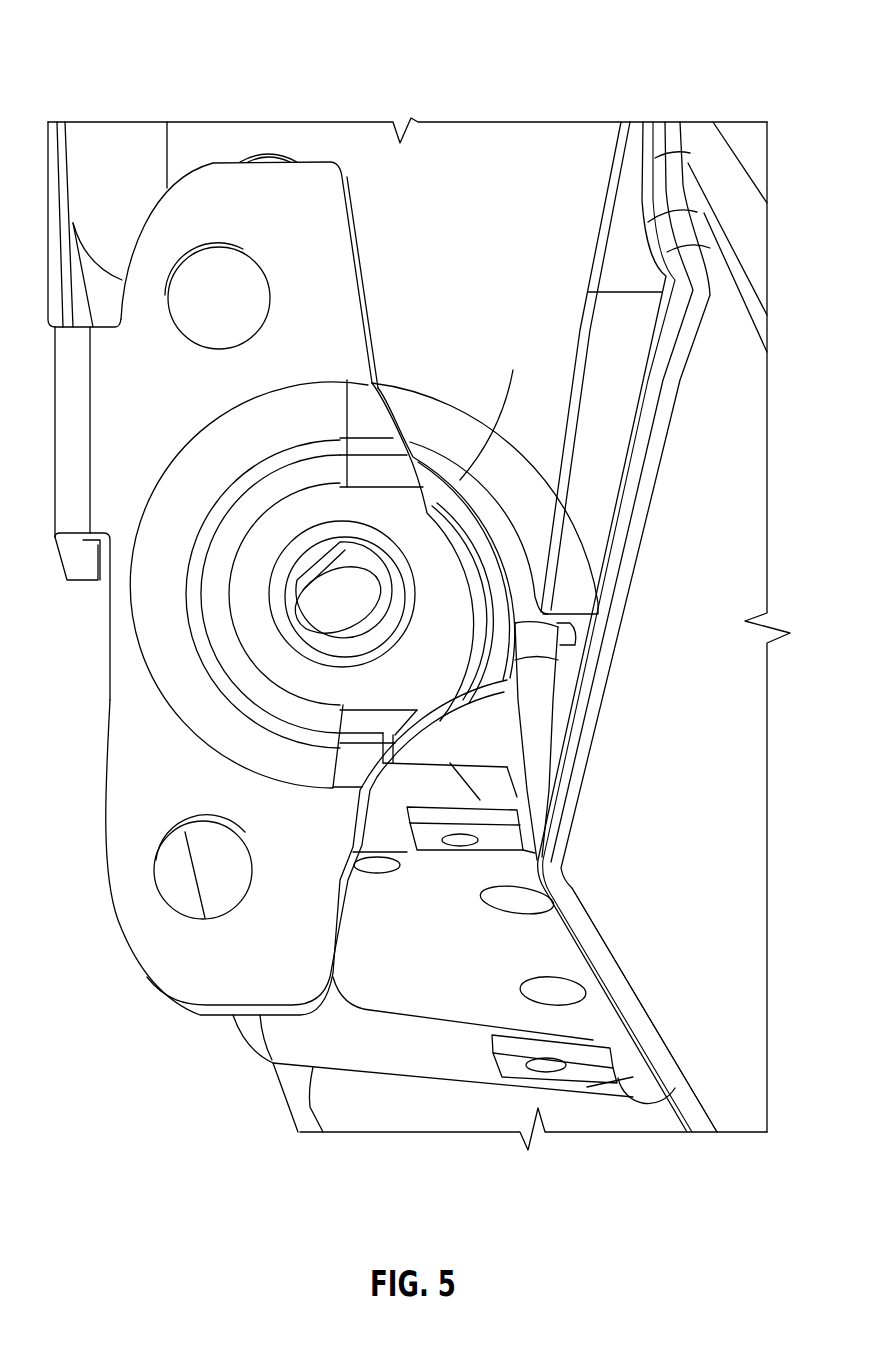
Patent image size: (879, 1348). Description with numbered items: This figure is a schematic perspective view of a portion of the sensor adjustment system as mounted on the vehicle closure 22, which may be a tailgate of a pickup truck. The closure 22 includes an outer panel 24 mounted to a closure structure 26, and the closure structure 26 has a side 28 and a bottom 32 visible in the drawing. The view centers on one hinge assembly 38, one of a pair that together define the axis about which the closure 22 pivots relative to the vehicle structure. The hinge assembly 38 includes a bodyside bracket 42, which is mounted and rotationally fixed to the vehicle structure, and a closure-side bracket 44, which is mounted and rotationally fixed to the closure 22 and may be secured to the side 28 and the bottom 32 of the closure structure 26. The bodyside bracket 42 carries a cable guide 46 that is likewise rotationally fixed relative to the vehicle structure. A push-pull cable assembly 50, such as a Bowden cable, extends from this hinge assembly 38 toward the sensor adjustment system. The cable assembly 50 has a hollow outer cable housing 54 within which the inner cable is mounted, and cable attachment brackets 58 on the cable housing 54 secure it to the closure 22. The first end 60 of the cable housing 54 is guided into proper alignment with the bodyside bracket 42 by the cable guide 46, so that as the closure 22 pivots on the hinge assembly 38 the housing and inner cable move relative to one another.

The closure 22 is at (748, 38).
The outer panel 24 is at (683, 1072).
The closure structure 26 is at (509, 122).
The side 28 is at (130, 122).
The bottom 32 is at (378, 1133).
The hinge assembly 38 is at (105, 667).
The bodyside bracket 42 is at (123, 933).
The closure-side bracket 44 is at (377, 1003).
The cable guide 46 is at (582, 505).
The cable assembly 50 is at (562, 683).
The cable housing 54 is at (627, 1083).
The cable attachment bracket 58 is at (497, 1070).
The first end 60 is at (460, 470).